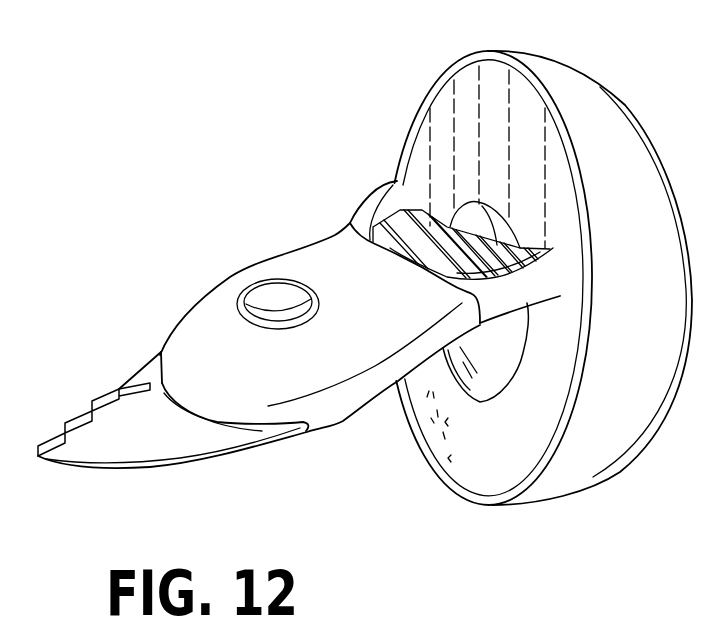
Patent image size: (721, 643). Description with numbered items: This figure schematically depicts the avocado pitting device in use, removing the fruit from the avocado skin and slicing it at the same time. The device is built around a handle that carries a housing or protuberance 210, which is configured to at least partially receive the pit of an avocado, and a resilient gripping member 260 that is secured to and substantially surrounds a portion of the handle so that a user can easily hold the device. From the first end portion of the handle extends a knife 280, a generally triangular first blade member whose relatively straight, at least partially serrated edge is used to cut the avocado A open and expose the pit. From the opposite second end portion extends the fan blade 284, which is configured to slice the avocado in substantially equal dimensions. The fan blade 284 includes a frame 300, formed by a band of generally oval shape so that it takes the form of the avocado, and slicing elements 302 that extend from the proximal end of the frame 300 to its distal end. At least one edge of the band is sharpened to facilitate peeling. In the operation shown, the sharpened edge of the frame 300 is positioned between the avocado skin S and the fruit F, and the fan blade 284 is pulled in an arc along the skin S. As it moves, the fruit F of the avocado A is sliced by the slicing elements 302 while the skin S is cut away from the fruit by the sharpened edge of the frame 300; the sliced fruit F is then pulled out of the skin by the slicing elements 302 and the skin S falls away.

The avocado A is at (587, 83).
The avocado skin S is at (587, 337).
The fruit F is at (467, 470).
The protuberance 210 is at (192, 325).
The resilient gripping member 260 is at (343, 406).
The knife 280 is at (50, 402).
The fan blade 284 is at (368, 183).
The frame 300 is at (538, 287).
The slicing elements 302 is at (382, 257).